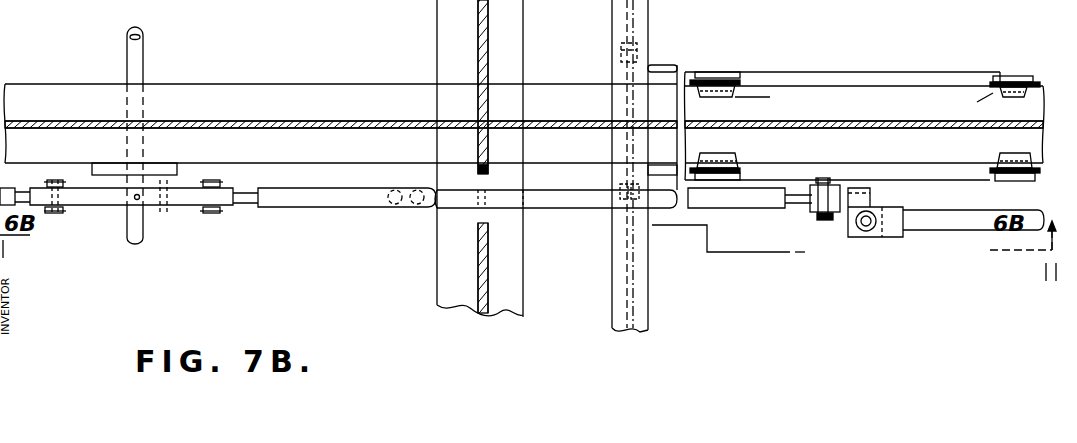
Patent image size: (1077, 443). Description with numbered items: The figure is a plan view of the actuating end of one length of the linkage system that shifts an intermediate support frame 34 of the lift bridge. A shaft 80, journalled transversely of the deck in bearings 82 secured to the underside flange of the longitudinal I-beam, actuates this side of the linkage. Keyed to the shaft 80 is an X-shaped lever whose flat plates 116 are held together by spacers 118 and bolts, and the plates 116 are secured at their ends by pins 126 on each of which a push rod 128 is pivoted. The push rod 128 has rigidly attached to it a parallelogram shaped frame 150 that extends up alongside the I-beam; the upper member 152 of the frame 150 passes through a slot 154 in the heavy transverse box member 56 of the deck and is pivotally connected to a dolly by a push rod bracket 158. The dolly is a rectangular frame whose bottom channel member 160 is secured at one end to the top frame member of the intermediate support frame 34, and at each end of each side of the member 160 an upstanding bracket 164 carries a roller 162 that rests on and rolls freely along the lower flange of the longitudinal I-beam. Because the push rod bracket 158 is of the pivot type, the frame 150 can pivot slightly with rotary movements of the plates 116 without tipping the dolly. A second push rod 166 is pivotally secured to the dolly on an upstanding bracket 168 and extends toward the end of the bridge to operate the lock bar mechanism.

The intermediate support frame 34 is at (662, 32).
The box member 56 is at (512, 40).
The shaft 80 is at (138, 55).
The bearing 82 is at (165, 172).
The plate 116 is at (78, 178).
The spacer 118 is at (102, 198).
The pin 126 is at (213, 178).
The push rod 128 is at (190, 218).
The parallelogram shaped frame 150 is at (323, 192).
The upper member 152 is at (567, 200).
The slot 154 is at (483, 180).
The push rod bracket 158 is at (817, 208).
The bottom channel member 160 is at (850, 70).
The roller 162 is at (733, 153).
The upstanding bracket 164 is at (720, 73).
The second push rod 166 is at (970, 230).
The upstanding bracket 168 is at (858, 200).